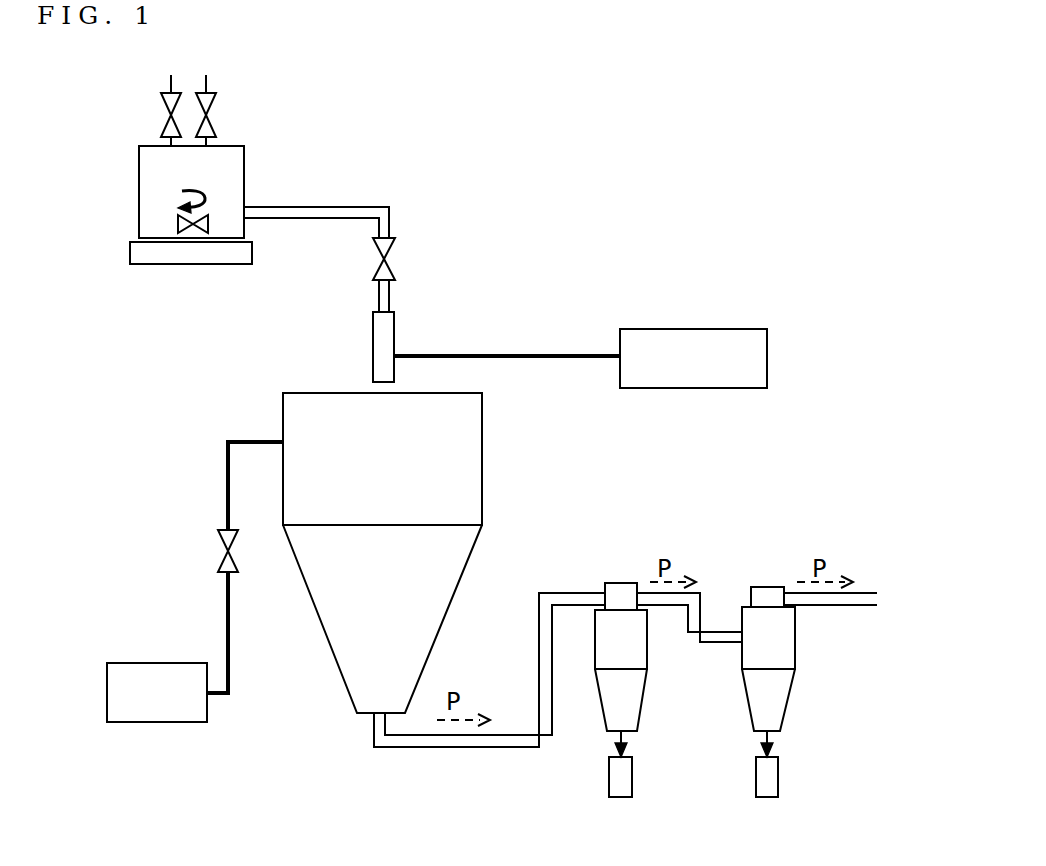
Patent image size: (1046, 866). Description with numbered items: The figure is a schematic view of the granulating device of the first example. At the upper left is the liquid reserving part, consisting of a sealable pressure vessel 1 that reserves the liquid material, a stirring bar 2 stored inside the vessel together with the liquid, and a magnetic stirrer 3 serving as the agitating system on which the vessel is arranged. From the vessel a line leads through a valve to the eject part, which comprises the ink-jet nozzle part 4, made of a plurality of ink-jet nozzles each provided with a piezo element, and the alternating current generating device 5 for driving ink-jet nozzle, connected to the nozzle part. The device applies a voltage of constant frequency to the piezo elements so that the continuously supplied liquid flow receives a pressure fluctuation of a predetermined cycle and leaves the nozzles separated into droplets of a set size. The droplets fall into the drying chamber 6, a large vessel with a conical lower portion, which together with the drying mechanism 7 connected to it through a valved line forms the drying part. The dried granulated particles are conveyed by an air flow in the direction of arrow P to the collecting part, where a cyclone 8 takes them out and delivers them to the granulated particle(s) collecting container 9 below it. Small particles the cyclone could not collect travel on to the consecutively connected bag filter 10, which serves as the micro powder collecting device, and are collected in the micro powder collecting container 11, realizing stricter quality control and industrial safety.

The pressure vessel 1 is at (210, 163).
The stirring bar 2 is at (206, 218).
The magnetic stirrer 3 is at (190, 246).
The ink-jet nozzle part 4 is at (388, 338).
The alternating current generating device for driving ink-jet nozzle 5 is at (665, 353).
The drying chamber 6 is at (448, 572).
The drying mechanism 7 is at (195, 702).
The cyclone 8 is at (633, 638).
The granulated particle(s) collecting container 9 is at (620, 770).
The bag filter 10 is at (775, 628).
The micro powder collecting container 11 is at (773, 773).